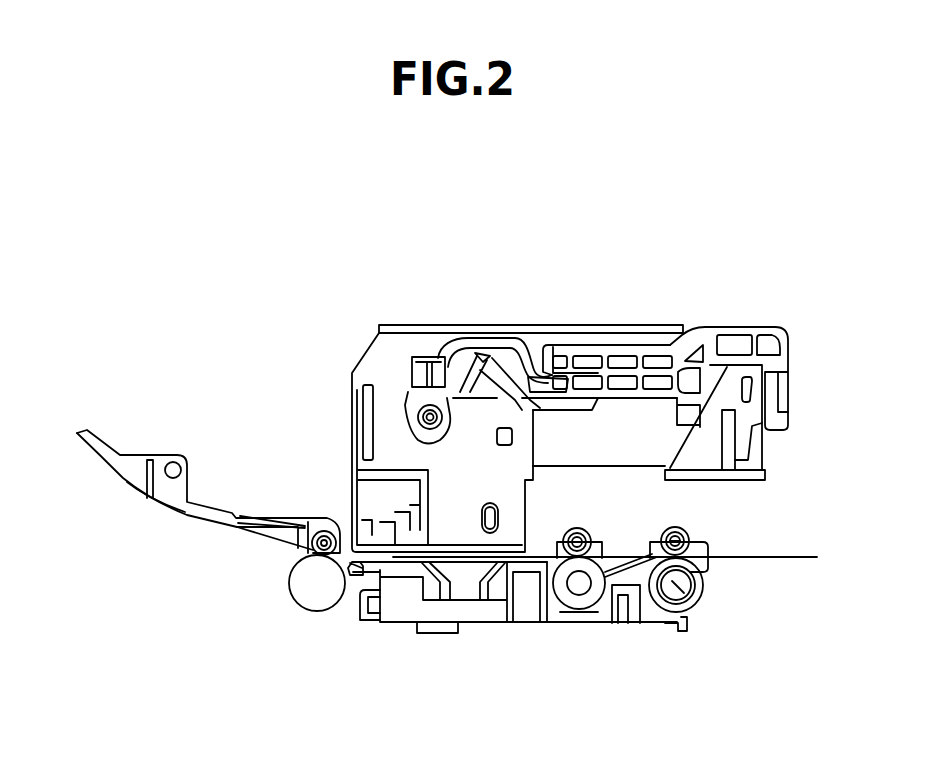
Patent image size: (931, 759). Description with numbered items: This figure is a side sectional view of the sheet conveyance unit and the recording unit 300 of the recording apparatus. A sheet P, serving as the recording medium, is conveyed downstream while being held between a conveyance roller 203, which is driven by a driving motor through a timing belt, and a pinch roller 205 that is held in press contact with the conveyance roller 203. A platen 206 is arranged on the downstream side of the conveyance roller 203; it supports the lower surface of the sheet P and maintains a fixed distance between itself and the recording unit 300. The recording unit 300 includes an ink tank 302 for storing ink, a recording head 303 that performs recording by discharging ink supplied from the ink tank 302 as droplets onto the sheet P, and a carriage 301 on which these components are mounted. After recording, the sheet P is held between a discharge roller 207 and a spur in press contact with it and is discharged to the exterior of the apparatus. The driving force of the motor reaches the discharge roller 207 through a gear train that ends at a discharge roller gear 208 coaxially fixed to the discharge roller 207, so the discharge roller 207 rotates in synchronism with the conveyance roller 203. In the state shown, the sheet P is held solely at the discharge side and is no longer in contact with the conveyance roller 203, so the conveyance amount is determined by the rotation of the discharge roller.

The recording unit 300 is at (570, 380).
The carriage 301 is at (733, 325).
The ink tank 302 is at (554, 325).
The recording head 303 is at (357, 575).
The conveyance roller 203 is at (316, 607).
The pinch roller 205 is at (325, 531).
The platen 206 is at (470, 607).
The discharge roller 207 is at (691, 600).
The discharge roller gear 208 is at (697, 528).
The sheet P is at (763, 560).